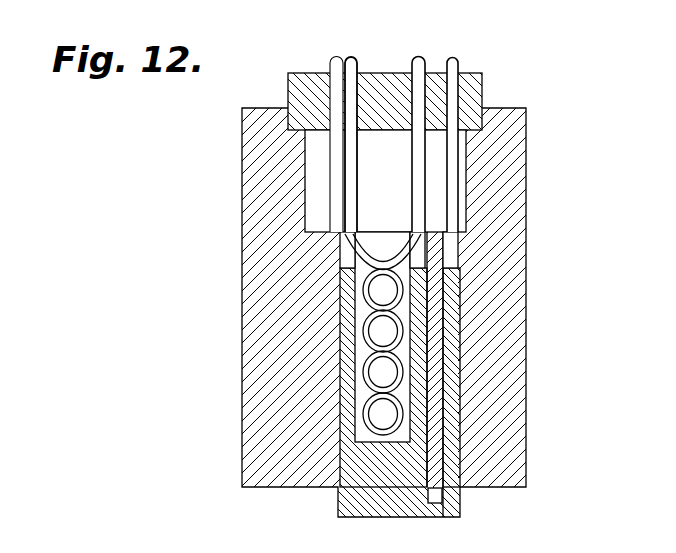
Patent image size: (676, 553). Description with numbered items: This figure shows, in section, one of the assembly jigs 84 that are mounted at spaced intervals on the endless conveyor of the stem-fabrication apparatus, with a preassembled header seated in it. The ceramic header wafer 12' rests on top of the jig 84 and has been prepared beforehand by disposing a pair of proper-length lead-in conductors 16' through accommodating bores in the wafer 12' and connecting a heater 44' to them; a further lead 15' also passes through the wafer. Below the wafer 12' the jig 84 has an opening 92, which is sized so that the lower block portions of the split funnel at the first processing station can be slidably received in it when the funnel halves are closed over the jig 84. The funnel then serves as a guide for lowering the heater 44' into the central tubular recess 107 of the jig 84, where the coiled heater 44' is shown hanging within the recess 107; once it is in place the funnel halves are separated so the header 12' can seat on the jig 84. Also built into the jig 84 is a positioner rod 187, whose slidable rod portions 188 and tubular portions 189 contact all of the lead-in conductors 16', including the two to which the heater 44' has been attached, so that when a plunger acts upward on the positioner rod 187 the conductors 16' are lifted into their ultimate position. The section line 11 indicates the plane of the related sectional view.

The assembly jig 84 is at (526, 138).
The ceramic header wafer 12' is at (410, 98).
The opening 92 is at (402, 176).
The heater 44' is at (312, 359).
The slidable rod portion 188 is at (450, 303).
The lead wire 15' is at (316, 126).
The lead-in conductor 16' is at (401, 128).
The tubular portion 189 is at (362, 268).
The central tubular recess 107 is at (357, 350).
The positioner rod 187 is at (443, 497).
The section line 11 is at (283, 183).